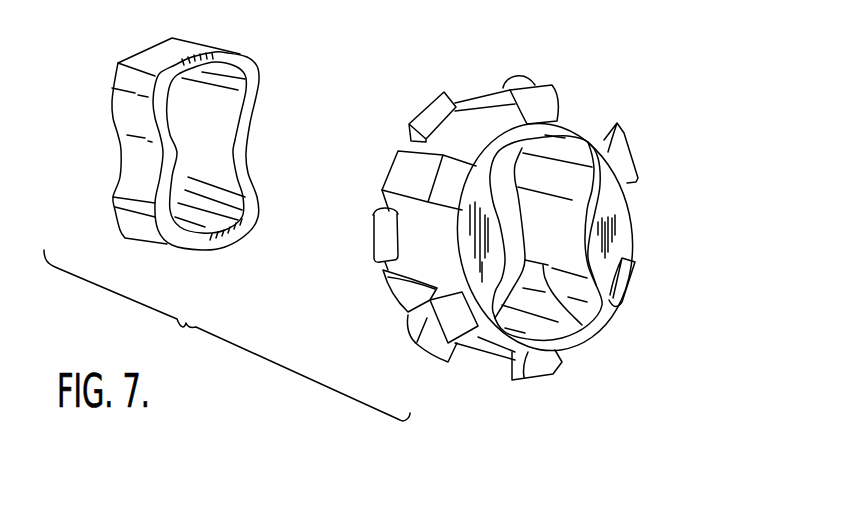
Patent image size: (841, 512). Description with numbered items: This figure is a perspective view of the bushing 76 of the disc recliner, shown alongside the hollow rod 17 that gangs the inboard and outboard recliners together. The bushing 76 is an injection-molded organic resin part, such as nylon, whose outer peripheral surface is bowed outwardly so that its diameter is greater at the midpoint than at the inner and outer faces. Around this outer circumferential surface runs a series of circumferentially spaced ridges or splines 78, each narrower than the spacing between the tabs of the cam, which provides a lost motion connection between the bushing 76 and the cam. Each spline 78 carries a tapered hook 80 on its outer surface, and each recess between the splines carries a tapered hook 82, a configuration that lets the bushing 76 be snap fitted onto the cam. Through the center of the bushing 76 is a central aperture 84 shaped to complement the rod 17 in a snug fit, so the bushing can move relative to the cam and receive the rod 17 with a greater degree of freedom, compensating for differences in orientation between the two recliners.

The hollow rod 17 is at (256, 66).
The bushing 76 is at (603, 211).
The splines 78 is at (393, 173).
The tapered hook 80 is at (552, 102).
The tapered hook 82 is at (368, 245).
The central aperture 84 is at (582, 325).